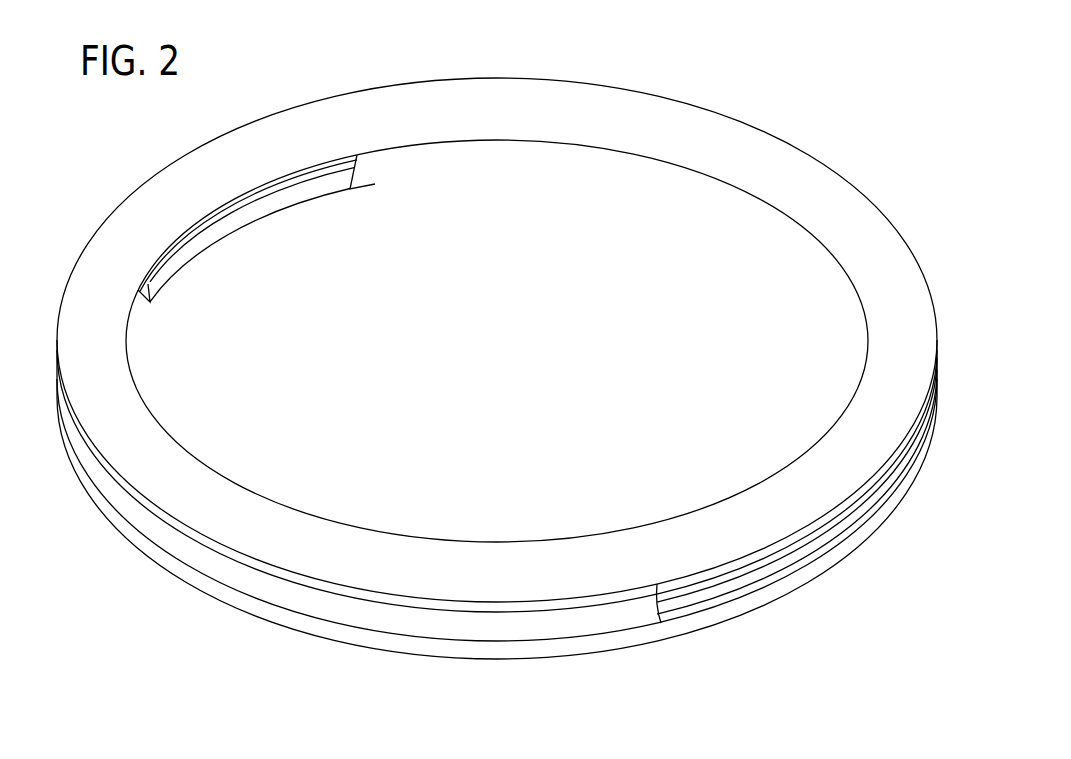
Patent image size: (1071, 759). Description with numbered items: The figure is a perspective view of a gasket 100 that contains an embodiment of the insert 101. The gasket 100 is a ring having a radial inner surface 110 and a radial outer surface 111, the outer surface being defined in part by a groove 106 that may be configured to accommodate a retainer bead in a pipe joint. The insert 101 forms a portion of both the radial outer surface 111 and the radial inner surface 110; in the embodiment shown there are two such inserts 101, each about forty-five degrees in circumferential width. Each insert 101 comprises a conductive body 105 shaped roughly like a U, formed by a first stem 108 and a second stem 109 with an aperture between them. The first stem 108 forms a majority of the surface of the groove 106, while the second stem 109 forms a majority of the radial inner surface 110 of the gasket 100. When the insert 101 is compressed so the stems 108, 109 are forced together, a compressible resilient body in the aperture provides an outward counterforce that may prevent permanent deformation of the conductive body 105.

The gasket 100 is at (810, 114).
The insert 101 is at (280, 218).
The conductive body 105 is at (835, 528).
The groove 106 is at (113, 489).
The first stem 108 is at (657, 588).
The second stem 109 is at (892, 466).
The radial inner surface 110 is at (525, 162).
The radial outer surface 111 is at (192, 578).